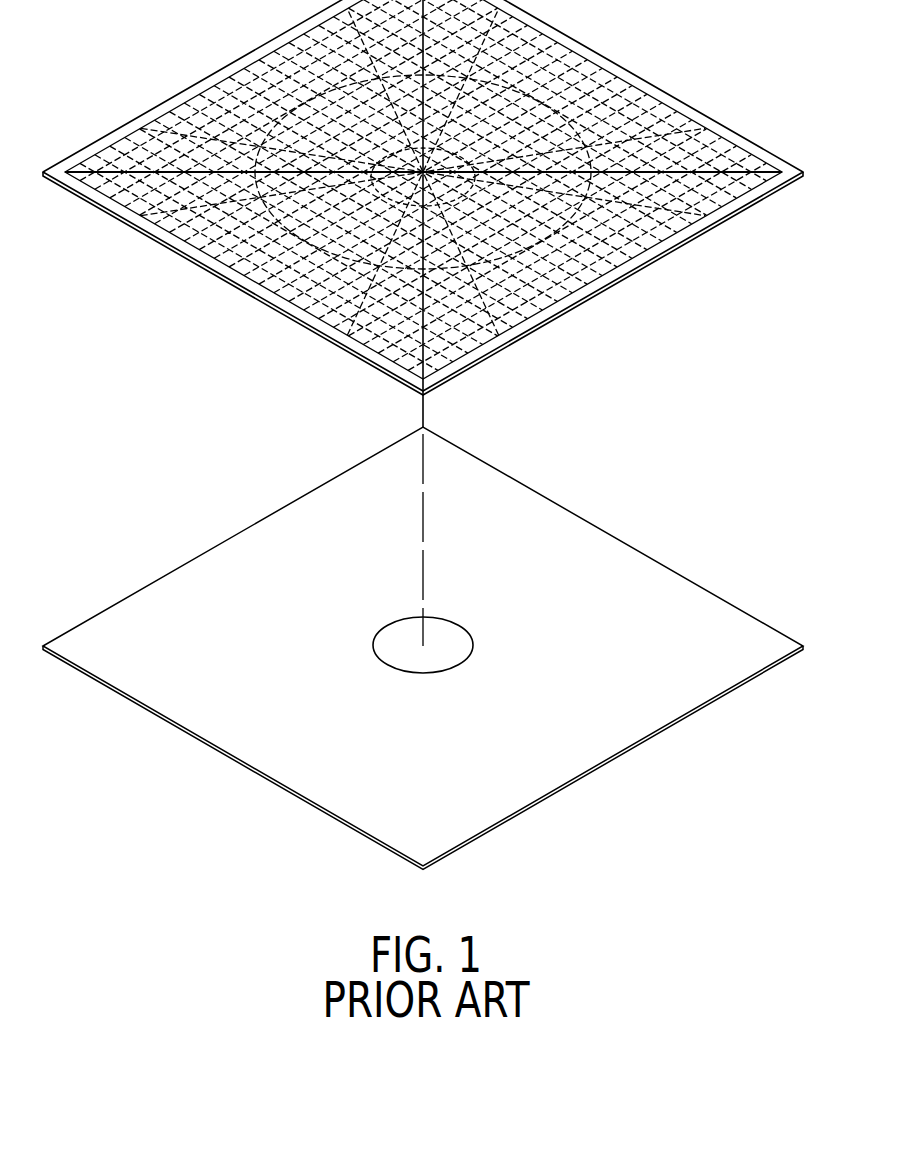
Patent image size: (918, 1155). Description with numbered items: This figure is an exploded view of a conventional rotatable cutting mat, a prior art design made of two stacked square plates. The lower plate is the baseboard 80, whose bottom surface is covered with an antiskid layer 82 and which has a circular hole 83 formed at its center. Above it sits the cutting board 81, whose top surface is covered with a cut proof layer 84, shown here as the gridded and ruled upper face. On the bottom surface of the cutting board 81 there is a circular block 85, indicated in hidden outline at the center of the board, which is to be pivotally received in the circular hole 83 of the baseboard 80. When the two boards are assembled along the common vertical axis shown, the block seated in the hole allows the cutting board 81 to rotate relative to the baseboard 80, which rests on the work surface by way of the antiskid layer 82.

The baseboard 80 is at (423, 648).
The cutting board 81 is at (423, 197).
The antiskid layer 82 is at (574, 785).
The circular hole 83 is at (437, 650).
The cut proof layer 84 is at (680, 100).
The circular block 85 is at (277, 308).